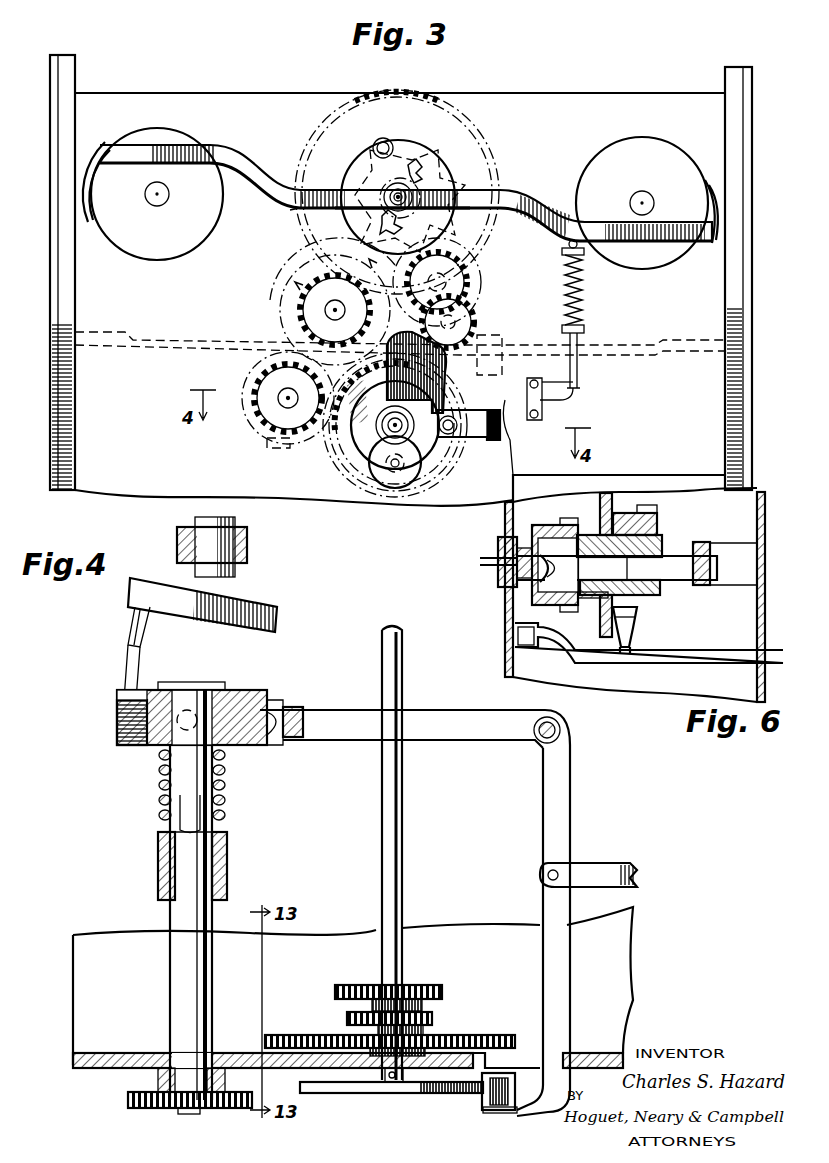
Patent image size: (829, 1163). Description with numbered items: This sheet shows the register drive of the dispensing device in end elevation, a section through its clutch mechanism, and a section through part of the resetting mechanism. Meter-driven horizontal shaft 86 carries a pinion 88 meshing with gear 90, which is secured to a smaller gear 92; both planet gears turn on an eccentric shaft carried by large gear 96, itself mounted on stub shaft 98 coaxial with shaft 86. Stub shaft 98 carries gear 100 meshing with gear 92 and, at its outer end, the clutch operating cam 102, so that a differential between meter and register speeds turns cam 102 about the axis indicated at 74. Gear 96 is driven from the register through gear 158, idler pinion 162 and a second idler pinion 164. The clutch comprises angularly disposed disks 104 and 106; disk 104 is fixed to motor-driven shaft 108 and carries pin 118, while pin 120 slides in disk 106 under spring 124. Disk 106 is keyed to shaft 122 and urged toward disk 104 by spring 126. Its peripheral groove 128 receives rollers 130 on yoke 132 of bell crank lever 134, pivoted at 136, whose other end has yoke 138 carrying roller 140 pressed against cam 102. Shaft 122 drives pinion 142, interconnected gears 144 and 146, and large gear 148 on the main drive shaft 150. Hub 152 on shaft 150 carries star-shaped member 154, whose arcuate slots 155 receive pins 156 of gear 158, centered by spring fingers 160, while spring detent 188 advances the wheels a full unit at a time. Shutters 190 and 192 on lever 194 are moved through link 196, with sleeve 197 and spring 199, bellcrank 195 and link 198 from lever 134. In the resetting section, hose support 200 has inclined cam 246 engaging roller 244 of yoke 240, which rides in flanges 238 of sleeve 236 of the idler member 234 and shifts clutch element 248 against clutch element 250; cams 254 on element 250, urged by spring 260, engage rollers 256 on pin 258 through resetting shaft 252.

In FIG. 3, the shaft 74 is at (398, 463).
In FIG. 4, the horizontal shaft 86 is at (402, 888).
In FIG. 4, the pinion 88 is at (412, 985).
In FIG. 3, the gear 90 is at (388, 470).
In FIG. 4, the gear 90 is at (335, 992).
In FIG. 3, the smaller gear 92 is at (390, 480).
In FIG. 3, the large gear 96 is at (440, 463).
In FIG. 4, the large gear 96 is at (470, 1038).
In FIG. 3, the stub shaft 98 is at (396, 432).
In FIG. 4, the stub shaft 98 is at (392, 1097).
In FIG. 3, the gear 100 is at (388, 427).
In FIG. 4, the gear 100 is at (433, 1019).
In FIG. 3, the clutch operating cam 102 is at (440, 395).
In FIG. 4, the clutch operating cam 102 is at (453, 1096).
In FIG. 4, the clutch disk 104 is at (278, 614).
In FIG. 4, the clutch disk 106 is at (266, 698).
In FIG. 4, the shaft 108 is at (242, 548).
In FIG. 4, the pin 118 is at (132, 625).
In FIG. 4, the pin 120 is at (129, 662).
In FIG. 3, the shaft 122 is at (284, 402).
In FIG. 4, the shaft 122 is at (185, 970).
In FIG. 4, the spring 124 is at (120, 718).
In FIG. 4, the spring 126 is at (228, 790).
In FIG. 4, the peripheral groove 128 is at (280, 738).
In FIG. 3, the pins or rollers 130 is at (290, 447).
In FIG. 4, the pins or rollers 130 is at (240, 693).
In FIG. 4, the yoke 132 is at (300, 710).
In FIG. 4, the bell crank lever 134 is at (440, 716).
In FIG. 4, the pivot 136 is at (545, 742).
In FIG. 4, the yoke 138 is at (518, 1112).
In FIG. 4, the roller 140 is at (500, 1083).
In FIG. 3, the pinion 142 is at (262, 385).
In FIG. 4, the pinion 142 is at (215, 1110).
In FIG. 3, the gear 144 is at (273, 300).
In FIG. 3, the gear 146 is at (317, 298).
In FIG. 3, the large gear 148 is at (303, 230).
In FIG. 3, the main drive shaft 150 is at (413, 202).
In FIG. 3, the hub 152 is at (347, 183).
In FIG. 3, the star-shaped member 154 is at (407, 205).
In FIG. 3, the arcuate slots 155 is at (412, 180).
In FIG. 3, the pins 156 is at (403, 193).
In FIG. 3, the gear 158 is at (355, 162).
In FIG. 3, the spring fingers 160 is at (392, 183).
In FIG. 3, the idler pinion 162 is at (447, 297).
In FIG. 3, the idler pinion 164 is at (460, 318).
In FIG. 3, the spring detent 188 is at (383, 138).
In FIG. 3, the shutter 190 is at (705, 245).
In FIG. 3, the shutter 192 is at (94, 224).
In FIG. 3, the lever 194 is at (530, 212).
In FIG. 3, the bellcrank 195 is at (575, 394).
In FIG. 3, the link 196 is at (580, 372).
In FIG. 3, the sleeve 197 is at (585, 292).
In FIG. 3, the link 198 is at (523, 413).
In FIG. 4, the link 198 is at (588, 872).
In FIG. 3, the spring 199 is at (584, 313).
In FIG. 6, the hose support 200 is at (737, 630).
In FIG. 6, the resetting clutch and idler member 234 is at (600, 640).
In FIG. 6, the sleeve 236 is at (595, 596).
In FIG. 6, the flanges 238 is at (637, 623).
In FIG. 6, the yoke 240 is at (657, 520).
In FIG. 6, the pin or roller 244 is at (632, 667).
In FIG. 6, the inclined cam 246 is at (618, 655).
In FIG. 6, the clutch element 248 is at (585, 520).
In FIG. 6, the clutch element 250 is at (577, 525).
In FIG. 6, the resetting shaft 252 is at (505, 562).
In FIG. 6, the cams 254 is at (525, 600).
In FIG. 6, the rollers 256 is at (560, 592).
In FIG. 6, the pin 258 is at (545, 585).
In FIG. 6, the spring 260 is at (627, 517).